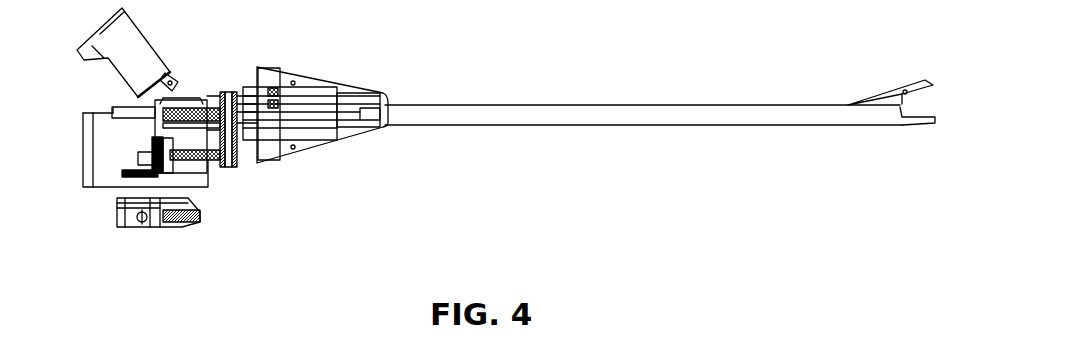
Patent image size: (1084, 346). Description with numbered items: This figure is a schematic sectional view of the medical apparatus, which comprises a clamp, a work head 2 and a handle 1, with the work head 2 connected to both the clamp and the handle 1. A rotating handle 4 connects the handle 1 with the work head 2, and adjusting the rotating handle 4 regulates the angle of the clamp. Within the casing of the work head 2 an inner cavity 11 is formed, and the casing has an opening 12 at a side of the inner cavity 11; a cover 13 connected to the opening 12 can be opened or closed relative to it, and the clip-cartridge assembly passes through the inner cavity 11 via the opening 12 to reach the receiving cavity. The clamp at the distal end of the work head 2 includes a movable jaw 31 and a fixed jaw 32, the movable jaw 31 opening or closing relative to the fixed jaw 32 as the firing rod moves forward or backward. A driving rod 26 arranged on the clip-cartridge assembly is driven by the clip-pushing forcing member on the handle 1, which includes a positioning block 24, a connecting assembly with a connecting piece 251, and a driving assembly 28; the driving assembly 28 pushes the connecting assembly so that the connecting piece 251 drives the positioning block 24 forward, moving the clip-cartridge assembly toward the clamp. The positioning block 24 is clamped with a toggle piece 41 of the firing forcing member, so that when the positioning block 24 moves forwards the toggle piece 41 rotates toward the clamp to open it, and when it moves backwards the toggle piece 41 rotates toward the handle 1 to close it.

The handle 1 is at (197, 222).
The work head 2 is at (460, 107).
The rotating handle 4 is at (313, 83).
The inner cavity 11 is at (115, 152).
The opening 12 is at (108, 98).
The cover 13 is at (132, 35).
The positioning block 24 is at (340, 137).
The driving rod 26 is at (183, 102).
The driving assembly 28 is at (125, 183).
The movable jaw 31 is at (902, 92).
The fixed jaw 32 is at (905, 127).
The toggle piece 41 is at (262, 73).
The connecting piece 251 is at (230, 157).